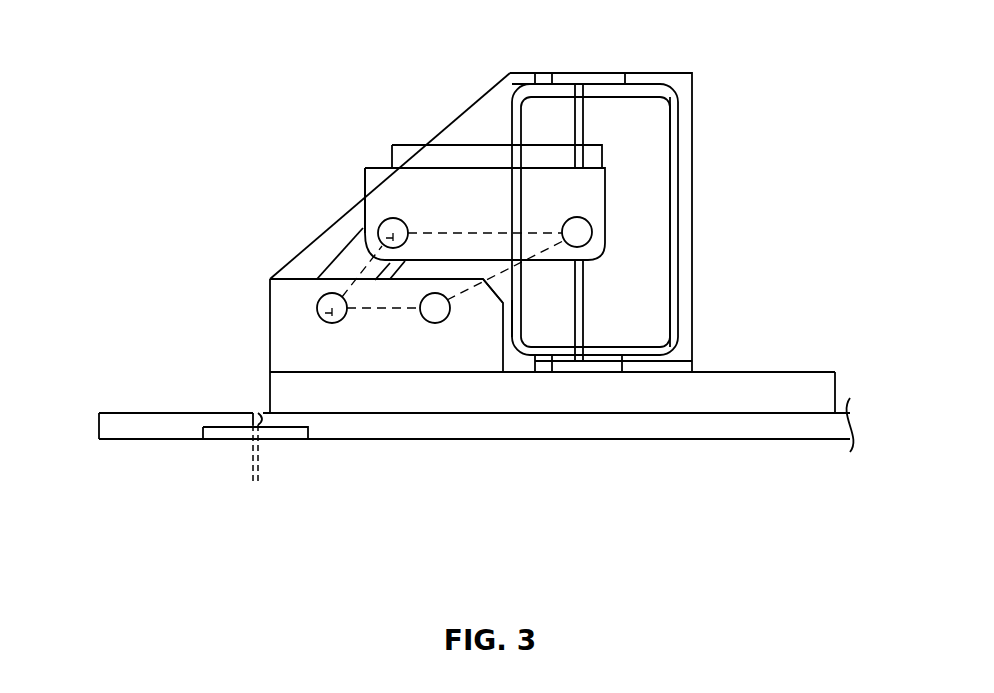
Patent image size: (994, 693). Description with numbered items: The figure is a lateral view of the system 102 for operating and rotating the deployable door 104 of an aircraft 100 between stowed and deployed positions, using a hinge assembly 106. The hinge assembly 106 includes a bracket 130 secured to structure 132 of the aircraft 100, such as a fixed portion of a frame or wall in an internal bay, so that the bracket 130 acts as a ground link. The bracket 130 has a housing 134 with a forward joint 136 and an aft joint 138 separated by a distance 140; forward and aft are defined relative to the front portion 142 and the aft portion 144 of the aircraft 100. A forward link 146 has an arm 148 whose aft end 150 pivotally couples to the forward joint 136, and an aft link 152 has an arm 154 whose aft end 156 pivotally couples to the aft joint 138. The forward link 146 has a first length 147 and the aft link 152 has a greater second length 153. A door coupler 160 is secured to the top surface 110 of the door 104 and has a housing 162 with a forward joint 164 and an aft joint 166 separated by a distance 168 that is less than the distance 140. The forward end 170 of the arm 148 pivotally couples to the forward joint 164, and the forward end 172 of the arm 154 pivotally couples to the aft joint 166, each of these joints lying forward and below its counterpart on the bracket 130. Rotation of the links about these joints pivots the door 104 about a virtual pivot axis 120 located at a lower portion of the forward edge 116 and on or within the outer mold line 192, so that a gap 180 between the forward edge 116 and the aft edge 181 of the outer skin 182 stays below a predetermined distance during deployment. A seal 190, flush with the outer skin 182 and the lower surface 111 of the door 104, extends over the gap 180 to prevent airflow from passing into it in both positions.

The aircraft 100 is at (80, 432).
The system 102 is at (170, 222).
The door 104 is at (520, 443).
The hinge assembly 106 is at (392, 158).
The top surface 110 is at (835, 372).
The lower surface 111 is at (368, 442).
The forward edge 116 is at (255, 412).
The pivot axis 120 is at (253, 487).
The bracket 130 is at (595, 200).
The structure 132 is at (460, 143).
The housing 134 is at (597, 213).
The forward joint 136 is at (362, 202).
The aft joint 138 is at (600, 240).
The distance 140 is at (515, 228).
The front portion 142 is at (62, 110).
The aft portion 144 is at (935, 110).
The forward link 146 is at (348, 247).
The first length 147 is at (357, 281).
The arm 148 is at (348, 272).
The aft end 150 is at (400, 220).
The aft link 152 is at (540, 272).
The second length 153 is at (677, 353).
The arm 154 is at (518, 277).
The aft end 156 is at (578, 224).
The door coupler 160 is at (478, 348).
The housing 162 is at (322, 353).
The forward joint 164 is at (317, 308).
The aft joint 166 is at (513, 323).
The distance 168 is at (418, 312).
The forward end 170 is at (320, 326).
The forward end 172 is at (427, 300).
The gap 180 is at (260, 492).
The aft edge 181 is at (253, 413).
The outer skin 182 is at (130, 413).
The seal 190 is at (213, 440).
The outer mold line 192 is at (162, 447).